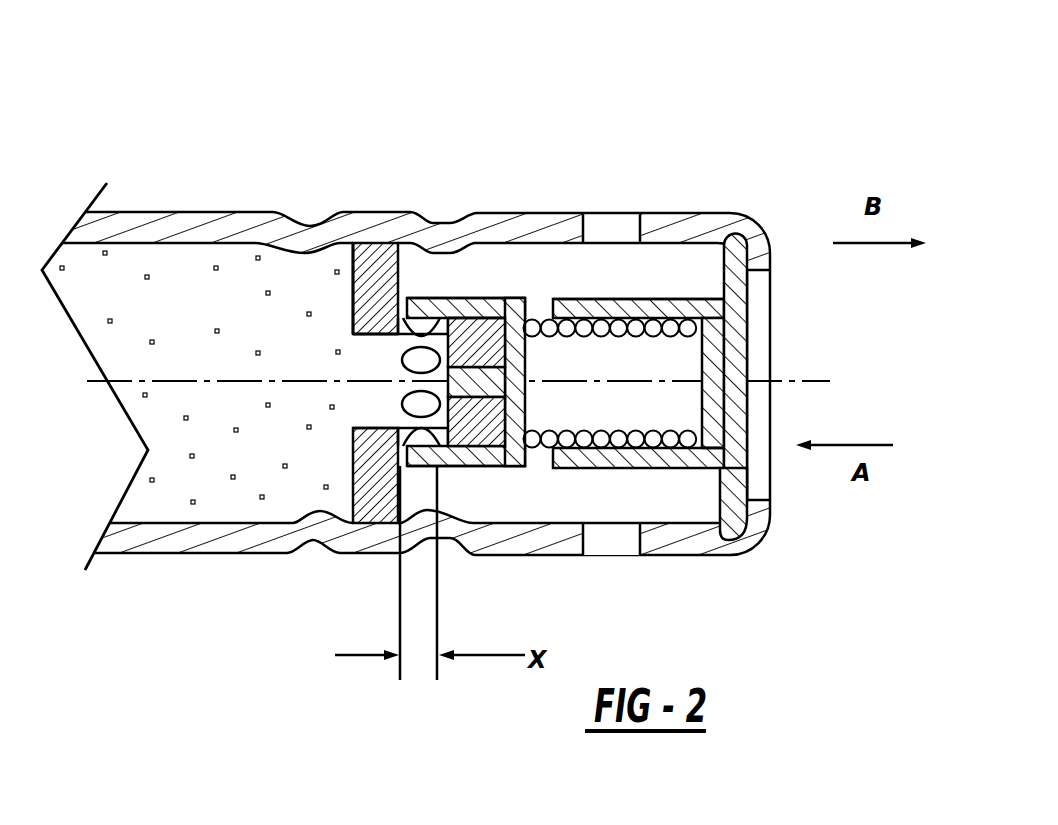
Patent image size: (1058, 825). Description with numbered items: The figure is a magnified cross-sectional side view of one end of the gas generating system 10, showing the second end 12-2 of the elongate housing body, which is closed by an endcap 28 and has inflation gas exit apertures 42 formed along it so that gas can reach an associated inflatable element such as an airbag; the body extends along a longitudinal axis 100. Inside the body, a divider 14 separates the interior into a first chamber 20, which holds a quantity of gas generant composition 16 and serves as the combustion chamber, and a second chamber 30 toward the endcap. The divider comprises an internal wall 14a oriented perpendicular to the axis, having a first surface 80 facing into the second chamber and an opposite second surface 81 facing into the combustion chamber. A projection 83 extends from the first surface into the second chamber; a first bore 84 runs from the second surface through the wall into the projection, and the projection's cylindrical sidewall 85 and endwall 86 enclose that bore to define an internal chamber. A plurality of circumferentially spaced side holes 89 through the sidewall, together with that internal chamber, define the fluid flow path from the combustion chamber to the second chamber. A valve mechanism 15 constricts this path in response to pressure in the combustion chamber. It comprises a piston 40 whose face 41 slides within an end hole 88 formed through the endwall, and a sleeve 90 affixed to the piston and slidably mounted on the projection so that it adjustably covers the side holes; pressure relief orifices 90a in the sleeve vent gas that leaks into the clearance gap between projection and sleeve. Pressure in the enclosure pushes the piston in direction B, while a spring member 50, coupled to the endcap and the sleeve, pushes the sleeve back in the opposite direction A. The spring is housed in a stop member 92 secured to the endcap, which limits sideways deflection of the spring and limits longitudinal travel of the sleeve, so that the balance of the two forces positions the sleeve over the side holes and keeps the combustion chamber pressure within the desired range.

The gas generating system 10 is at (461, 421).
The second end 12-2 is at (707, 557).
The divider 14 is at (391, 264).
The internal wall 14a is at (376, 265).
The valve mechanism 15 is at (593, 297).
The gas generant composition 16 is at (188, 300).
The first chamber 20 is at (176, 496).
The endcap 28 is at (735, 272).
The second chamber 30 is at (531, 498).
The piston 40 is at (477, 400).
The face 41 is at (447, 372).
The inflation gas exit apertures 42 is at (648, 540).
The spring member 50 is at (532, 452).
The first surface 80 is at (420, 328).
The second surface 81 is at (355, 268).
The projection 83 is at (512, 325).
The first bore 84 is at (390, 358).
The cylindrical sidewall 85 is at (455, 452).
The endwall 86 is at (527, 412).
The end hole 88 is at (528, 305).
The side holes 89 is at (460, 310).
The sleeve 90 is at (621, 224).
The pressure relief orifices 90a is at (467, 332).
The stop member 92 is at (677, 470).
The longitudinal axis 100 is at (815, 383).